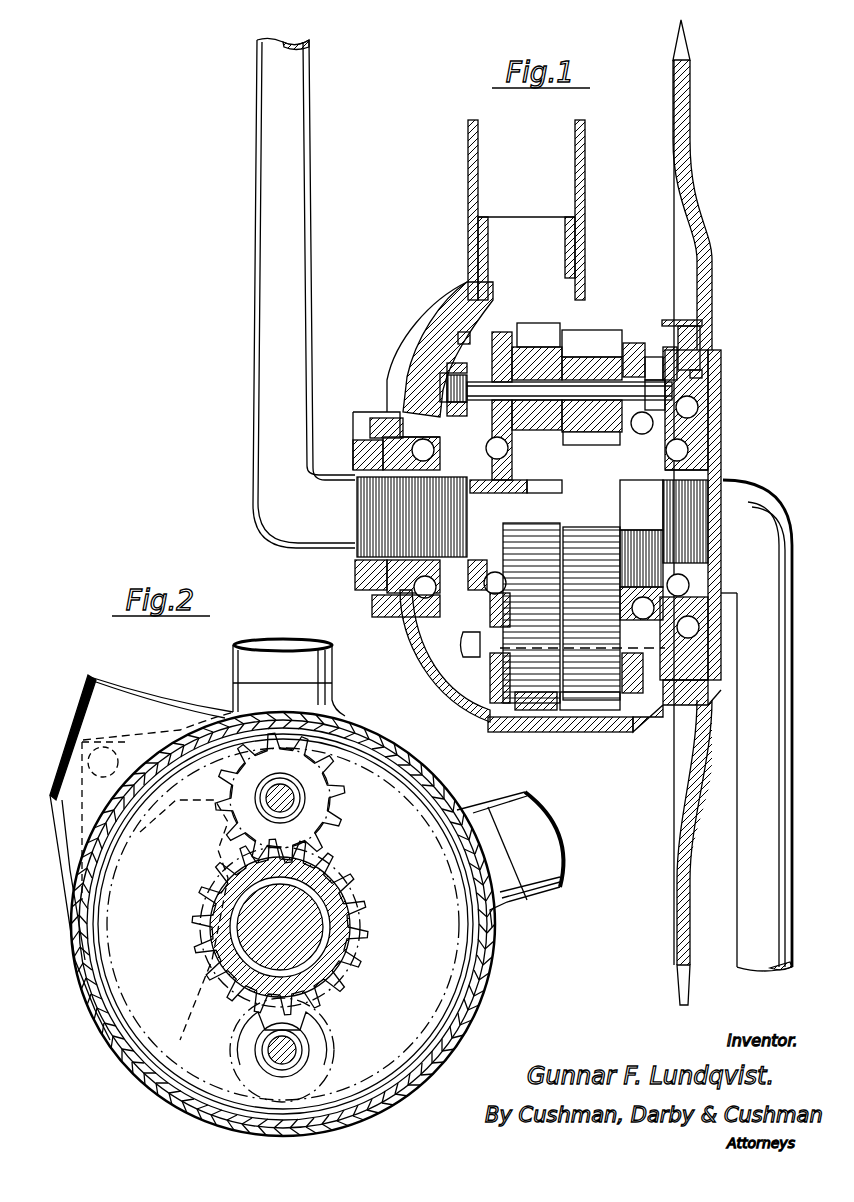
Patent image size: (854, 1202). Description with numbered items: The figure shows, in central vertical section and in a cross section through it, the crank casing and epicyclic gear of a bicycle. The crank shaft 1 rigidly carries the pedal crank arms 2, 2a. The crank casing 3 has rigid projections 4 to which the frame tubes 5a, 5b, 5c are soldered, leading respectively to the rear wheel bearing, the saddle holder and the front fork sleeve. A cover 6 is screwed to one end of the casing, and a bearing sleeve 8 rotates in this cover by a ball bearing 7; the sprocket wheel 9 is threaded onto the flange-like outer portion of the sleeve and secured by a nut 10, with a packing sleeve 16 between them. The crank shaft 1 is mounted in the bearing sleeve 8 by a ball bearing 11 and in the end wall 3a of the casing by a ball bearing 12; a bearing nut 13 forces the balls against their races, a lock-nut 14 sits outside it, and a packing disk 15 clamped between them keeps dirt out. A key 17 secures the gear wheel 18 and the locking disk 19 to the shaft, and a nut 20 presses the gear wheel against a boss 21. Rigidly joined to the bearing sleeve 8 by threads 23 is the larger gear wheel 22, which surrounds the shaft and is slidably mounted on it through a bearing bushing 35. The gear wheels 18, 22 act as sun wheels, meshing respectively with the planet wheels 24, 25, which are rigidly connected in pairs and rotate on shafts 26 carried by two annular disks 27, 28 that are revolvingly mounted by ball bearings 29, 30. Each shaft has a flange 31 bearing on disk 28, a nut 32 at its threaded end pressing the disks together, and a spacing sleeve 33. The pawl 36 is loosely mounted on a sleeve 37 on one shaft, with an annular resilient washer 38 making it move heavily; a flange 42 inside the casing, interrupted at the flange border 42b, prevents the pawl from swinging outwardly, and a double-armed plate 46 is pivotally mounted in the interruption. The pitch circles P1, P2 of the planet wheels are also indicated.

In FIG. 1, the crank shaft 1 is at (650, 520).
In FIG. 2, the crank shaft 1 is at (322, 940).
In FIG. 1, the pedal crank arm 2 is at (253, 262).
In FIG. 1, the pedal crank arm 2a is at (792, 758).
In FIG. 1, the crank casing 3 is at (490, 300).
In FIG. 2, the crank casing 3 is at (484, 980).
In FIG. 1, the end wall 3a is at (414, 660).
In FIG. 1, the rigid projections 4 is at (478, 240).
In FIG. 2, the frame tube 5a is at (110, 680).
In FIG. 1, the frame tube 5b is at (468, 137).
In FIG. 2, the frame tube 5b is at (233, 662).
In FIG. 2, the frame tube 5c is at (540, 896).
In FIG. 1, the cover 6 is at (676, 332).
In FIG. 2, the cover 6 is at (472, 996).
In FIG. 1, the ball bearing 7 is at (698, 407).
In FIG. 1, the bearing sleeve 8 is at (721, 432).
In FIG. 1, the sprocket wheel 9 is at (702, 226).
In FIG. 1, the nut 10 is at (700, 342).
In FIG. 1, the ball bearing 11 is at (688, 450).
In FIG. 1, the ball bearing 12 is at (396, 617).
In FIG. 1, the bearing nut 13 is at (356, 592).
In FIG. 1, the lock-nut 14 is at (355, 575).
In FIG. 1, the packing disk 15 is at (355, 412).
In FIG. 1, the packing sleeve 16 is at (700, 322).
In FIG. 1, the key 17 is at (496, 494).
In FIG. 1, the gear wheel 18 is at (541, 494).
In FIG. 1, the locking disk 19 is at (370, 460).
In FIG. 1, the nut 20 is at (455, 548).
In FIG. 1, the boss 21 is at (541, 523).
In FIG. 1, the gear wheel 22 is at (602, 527).
In FIG. 2, the gear wheel 22 is at (356, 918).
In FIG. 1, the threads 23 is at (710, 482).
In FIG. 1, the planet wheel 24 is at (535, 347).
In FIG. 2, the planet wheel 24 is at (332, 772).
In FIG. 1, the planet wheel 25 is at (590, 340).
In FIG. 2, the planet wheel 25 is at (336, 790).
In FIG. 1, the shaft 26 is at (633, 343).
In FIG. 2, the shaft 26 is at (305, 798).
In FIG. 1, the annular disk 27 is at (472, 325).
In FIG. 1, the annular disk 28 is at (655, 357).
In FIG. 1, the ball bearing 29 is at (503, 512).
In FIG. 1, the ball bearing 30 is at (705, 394).
In FIG. 1, the flange 31 is at (702, 376).
In FIG. 1, the nut 32 is at (452, 364).
In FIG. 1, the sleeve 33 is at (569, 391).
In FIG. 2, the sleeve 33 is at (294, 808).
In FIG. 1, the bearing bushing 35 is at (585, 447).
In FIG. 1, the pawl 36 is at (447, 392).
In FIG. 2, the pawl 36 is at (175, 838).
In FIG. 1, the sleeve 37 is at (442, 378).
In FIG. 1, the annular resilient washer 38 is at (500, 332).
In FIG. 1, the flange 42 is at (458, 336).
In FIG. 2, the flange 42 is at (150, 985).
In FIG. 2, the flange border 42b is at (100, 955).
In FIG. 2, the double-armed plate 46 is at (148, 732).
In FIG. 1, the pitch circle P1 is at (552, 323).
In FIG. 1, the pitch circle P2 is at (577, 712).